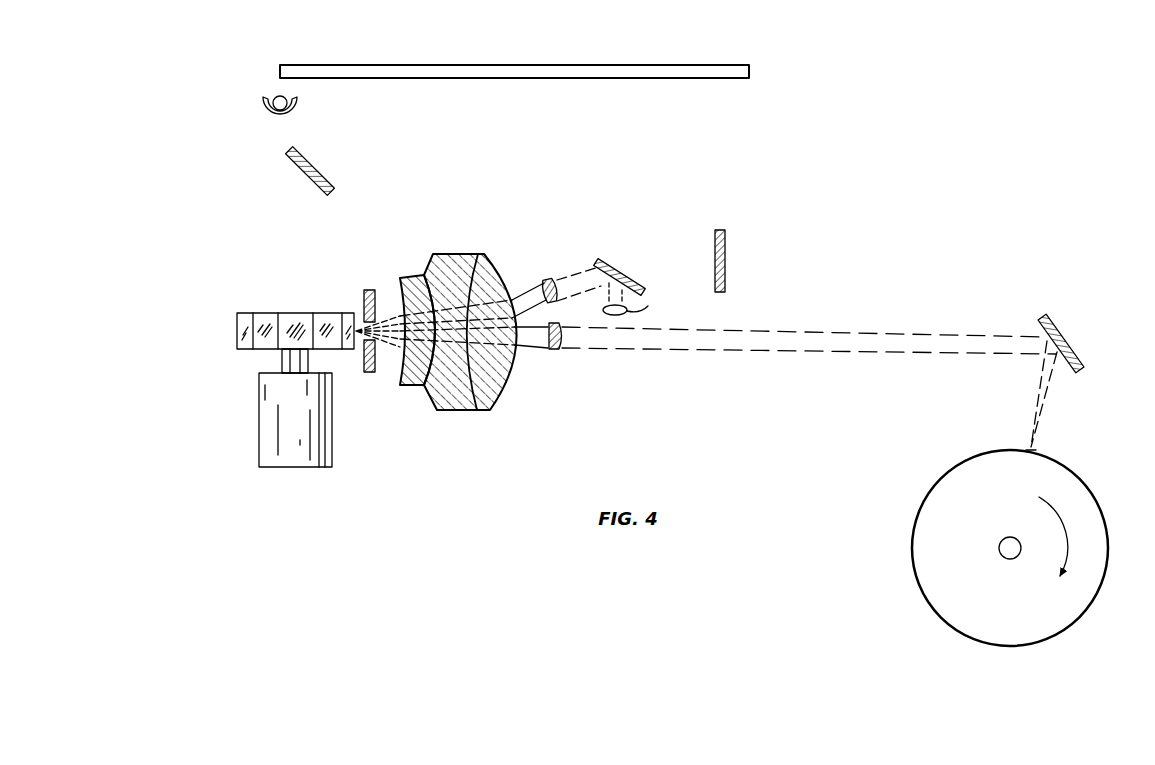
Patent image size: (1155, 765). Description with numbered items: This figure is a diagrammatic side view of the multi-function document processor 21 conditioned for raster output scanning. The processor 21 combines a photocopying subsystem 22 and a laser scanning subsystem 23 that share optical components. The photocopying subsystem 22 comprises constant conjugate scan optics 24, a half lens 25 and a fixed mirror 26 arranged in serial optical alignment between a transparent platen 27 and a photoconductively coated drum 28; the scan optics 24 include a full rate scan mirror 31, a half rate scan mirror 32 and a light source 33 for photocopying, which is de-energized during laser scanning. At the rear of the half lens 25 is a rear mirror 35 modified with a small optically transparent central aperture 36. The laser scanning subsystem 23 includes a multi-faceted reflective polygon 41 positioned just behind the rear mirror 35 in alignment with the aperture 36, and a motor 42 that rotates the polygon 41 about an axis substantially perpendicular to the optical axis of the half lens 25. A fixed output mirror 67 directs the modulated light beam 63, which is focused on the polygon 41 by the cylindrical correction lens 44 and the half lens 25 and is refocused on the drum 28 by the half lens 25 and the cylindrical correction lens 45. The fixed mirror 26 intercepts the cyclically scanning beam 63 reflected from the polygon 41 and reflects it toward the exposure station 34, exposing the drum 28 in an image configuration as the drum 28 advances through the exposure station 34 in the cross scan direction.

The multi-function document processor 21 is at (371, 52).
The photocopying subsystem 22 is at (758, 144).
The laser scanning subsystem 23 is at (283, 371).
The constant conjugate scan optics 24 is at (766, 246).
The half lens 25 is at (488, 258).
The fixed mirror 26 is at (1068, 334).
The transparent platen 27 is at (636, 72).
The photoconductively coated drum 28 is at (938, 583).
The full rate scan mirror 31 is at (299, 186).
The half rate scan mirror 32 is at (728, 235).
The light source 33 is at (263, 114).
The exposure station 34 is at (1038, 448).
The rear mirror 35 is at (362, 373).
The central aperture 36 is at (360, 310).
The multi-faceted reflective polygon 41 is at (290, 320).
The motor 42 is at (322, 447).
The cylindrical correction lens 44 is at (546, 278).
The cylindrical correction lens 45 is at (556, 350).
The diffracted light beam 63 is at (676, 336).
The fixed output mirror 67 is at (619, 267).